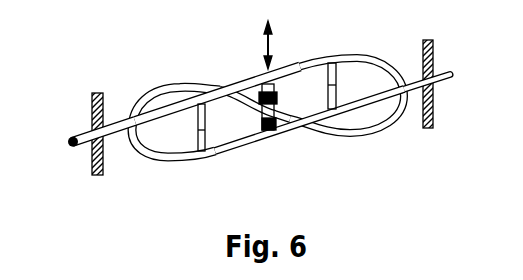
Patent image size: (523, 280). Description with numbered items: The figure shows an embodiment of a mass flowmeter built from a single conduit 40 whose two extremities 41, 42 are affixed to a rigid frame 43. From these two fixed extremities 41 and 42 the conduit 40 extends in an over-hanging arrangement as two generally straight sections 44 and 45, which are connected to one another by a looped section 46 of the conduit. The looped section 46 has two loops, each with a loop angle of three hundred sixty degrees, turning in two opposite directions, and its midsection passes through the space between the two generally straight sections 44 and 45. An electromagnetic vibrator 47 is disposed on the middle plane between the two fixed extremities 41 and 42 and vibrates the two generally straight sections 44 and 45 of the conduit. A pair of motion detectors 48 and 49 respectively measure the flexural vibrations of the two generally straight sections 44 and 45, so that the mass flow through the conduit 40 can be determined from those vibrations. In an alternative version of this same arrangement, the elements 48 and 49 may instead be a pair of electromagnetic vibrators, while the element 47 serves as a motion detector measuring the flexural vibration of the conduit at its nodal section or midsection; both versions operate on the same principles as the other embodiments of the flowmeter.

The conduit 40 is at (150, 162).
The first extremity of the conduit 41 is at (122, 137).
The second extremity of the conduit 42 is at (416, 112).
The rigid frame 43 is at (90, 115).
The first generally straight section 44 is at (305, 66).
The second generally straight section 45 is at (247, 150).
The looped section 46 is at (221, 86).
The electromagnetic vibrator 47 is at (292, 115).
The first motion detector 48 is at (345, 70).
The second motion detector 49 is at (211, 156).